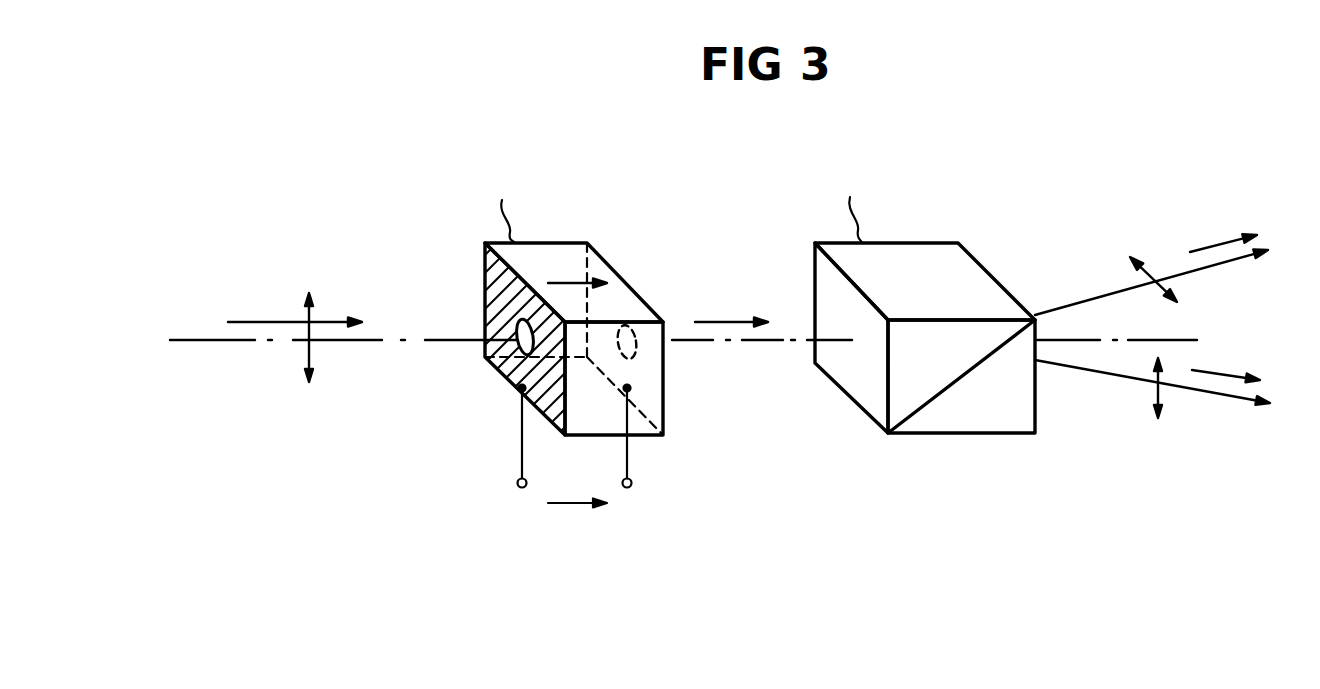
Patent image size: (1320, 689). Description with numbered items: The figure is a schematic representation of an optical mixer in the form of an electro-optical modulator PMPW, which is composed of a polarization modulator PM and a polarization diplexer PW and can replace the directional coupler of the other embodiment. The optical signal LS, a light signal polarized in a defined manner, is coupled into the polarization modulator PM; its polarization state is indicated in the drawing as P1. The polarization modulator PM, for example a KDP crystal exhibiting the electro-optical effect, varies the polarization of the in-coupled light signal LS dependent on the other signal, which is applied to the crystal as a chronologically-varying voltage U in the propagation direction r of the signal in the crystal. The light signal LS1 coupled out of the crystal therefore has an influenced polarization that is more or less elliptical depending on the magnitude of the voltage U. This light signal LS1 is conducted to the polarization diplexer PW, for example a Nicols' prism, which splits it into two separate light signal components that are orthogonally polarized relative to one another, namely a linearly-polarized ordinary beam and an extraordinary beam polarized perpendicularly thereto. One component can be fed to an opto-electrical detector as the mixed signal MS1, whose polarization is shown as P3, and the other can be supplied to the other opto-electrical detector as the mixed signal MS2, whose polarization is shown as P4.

The optical signal LS is at (295, 291).
The polarization state of input light beam P1 is at (321, 326).
The polarization modulator PM is at (598, 255).
The propagation direction r is at (580, 282).
The voltage U is at (575, 467).
The light signal LS1 is at (731, 305).
The polarization diplexer PW is at (942, 243).
The mixed signal MS1 is at (1151, 252).
The polarization state of first output beam P3 is at (1183, 254).
The mixed signal MS2 is at (1152, 412).
The polarization state of second output beam P4 is at (1183, 415).
The electro-optical modulator PMPW is at (766, 510).